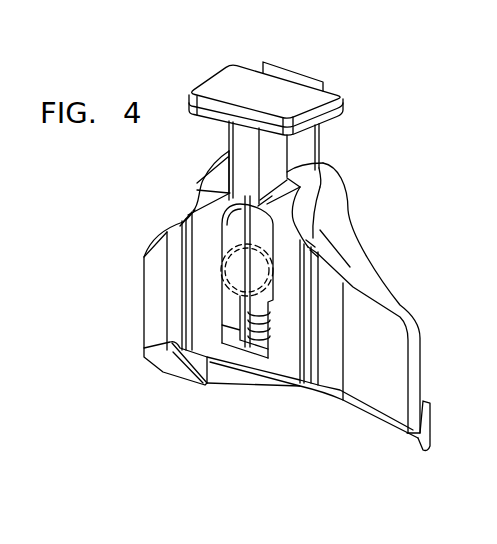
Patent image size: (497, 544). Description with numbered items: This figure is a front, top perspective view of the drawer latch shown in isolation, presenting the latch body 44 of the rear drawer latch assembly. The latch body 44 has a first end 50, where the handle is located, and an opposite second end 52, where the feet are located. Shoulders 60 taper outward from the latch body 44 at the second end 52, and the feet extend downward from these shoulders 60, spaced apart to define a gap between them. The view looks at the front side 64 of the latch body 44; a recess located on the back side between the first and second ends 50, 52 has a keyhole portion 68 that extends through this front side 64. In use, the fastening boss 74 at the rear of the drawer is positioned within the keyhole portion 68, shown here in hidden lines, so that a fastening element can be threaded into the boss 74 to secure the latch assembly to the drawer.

The latch body 44 is at (372, 146).
The first end 50 is at (180, 70).
The second end 52 is at (221, 415).
The shoulders 60 is at (176, 221).
The front side 64 is at (115, 342).
The keyhole portion 68 is at (253, 241).
The fastening boss 74 is at (224, 276).